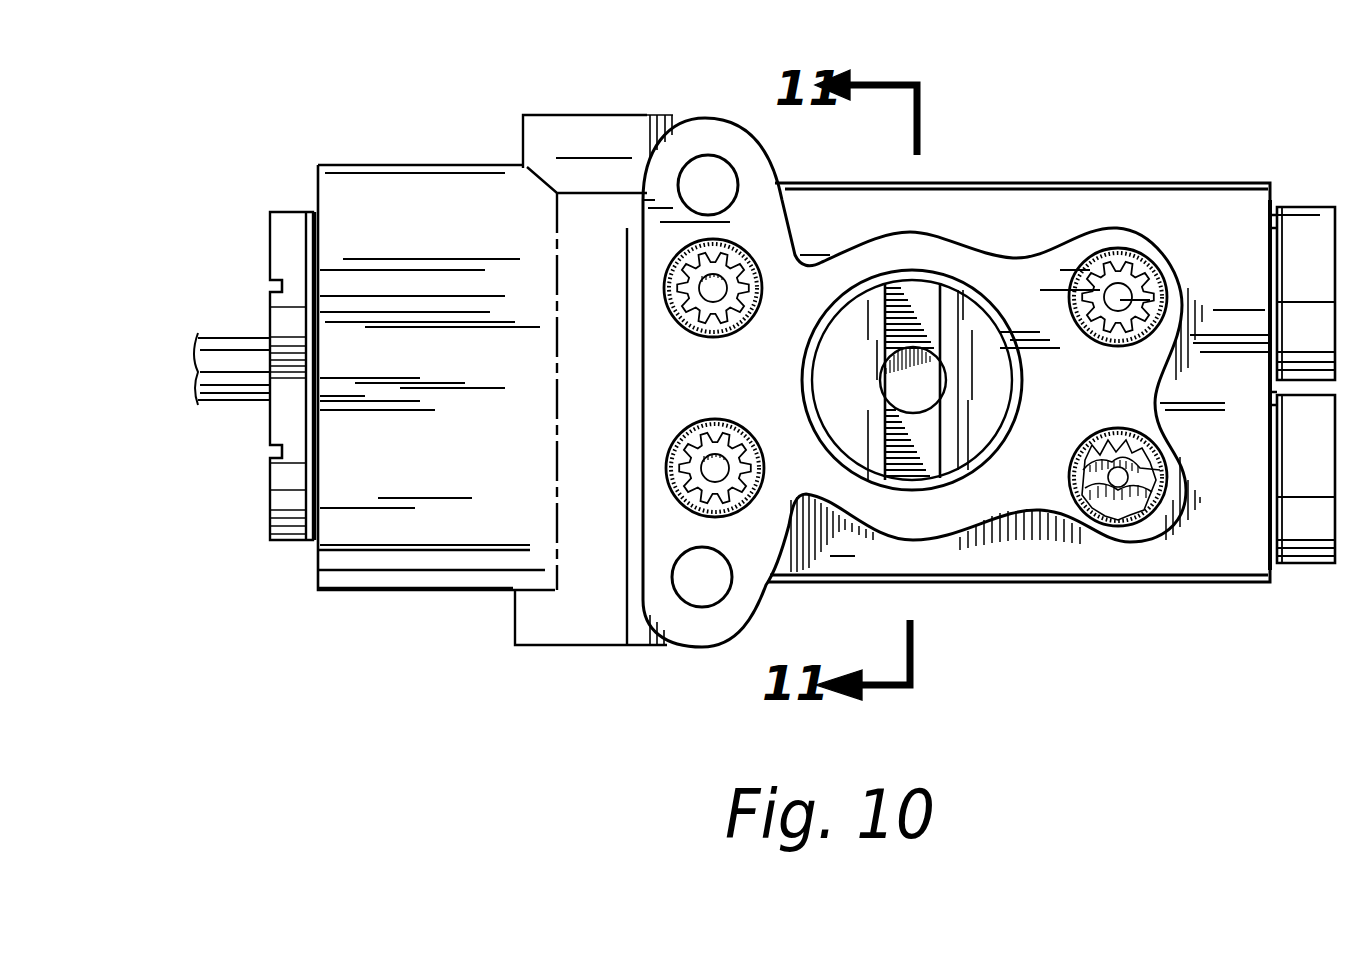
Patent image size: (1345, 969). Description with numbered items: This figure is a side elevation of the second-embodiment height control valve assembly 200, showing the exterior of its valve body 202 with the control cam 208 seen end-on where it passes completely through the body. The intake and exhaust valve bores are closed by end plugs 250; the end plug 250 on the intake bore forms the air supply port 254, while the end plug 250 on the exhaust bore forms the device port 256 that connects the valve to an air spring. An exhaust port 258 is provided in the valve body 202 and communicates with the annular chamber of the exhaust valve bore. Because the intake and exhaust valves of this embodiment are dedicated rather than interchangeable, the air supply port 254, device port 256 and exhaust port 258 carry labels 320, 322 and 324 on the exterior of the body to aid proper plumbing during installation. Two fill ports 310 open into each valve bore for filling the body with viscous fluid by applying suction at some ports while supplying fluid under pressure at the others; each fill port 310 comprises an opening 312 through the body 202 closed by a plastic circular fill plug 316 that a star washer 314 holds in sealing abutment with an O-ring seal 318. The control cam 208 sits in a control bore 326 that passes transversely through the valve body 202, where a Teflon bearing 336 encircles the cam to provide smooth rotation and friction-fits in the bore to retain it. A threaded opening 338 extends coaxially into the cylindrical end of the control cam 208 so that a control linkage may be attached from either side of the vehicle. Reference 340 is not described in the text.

The height control valve assembly 200 is at (612, 712).
The valve body 202 is at (1073, 205).
The control cam 208 is at (953, 457).
The end plug 250 is at (283, 235).
The air supply port 254 is at (252, 449).
The device port 256 is at (265, 285).
The exhaust port 258 is at (575, 115).
The fill port 310 is at (682, 334).
The opening 312 is at (1125, 503).
The star washer 314 is at (1085, 450).
The fill plug 316 is at (1158, 470).
The O-ring seal 318 is at (1157, 507).
The label 320 is at (448, 513).
The label 322 is at (443, 205).
The label 324 is at (635, 123).
The control bore 326 is at (987, 318).
The bearing 336 is at (937, 280).
The threaded opening 338 is at (947, 358).
The slot 340 is at (853, 440).